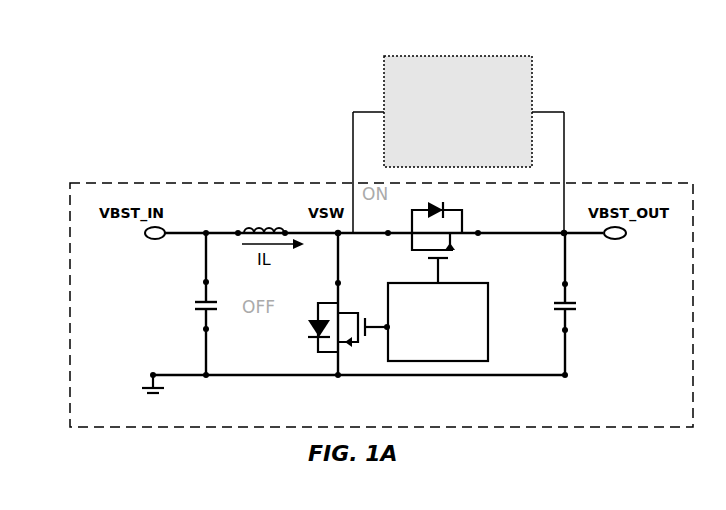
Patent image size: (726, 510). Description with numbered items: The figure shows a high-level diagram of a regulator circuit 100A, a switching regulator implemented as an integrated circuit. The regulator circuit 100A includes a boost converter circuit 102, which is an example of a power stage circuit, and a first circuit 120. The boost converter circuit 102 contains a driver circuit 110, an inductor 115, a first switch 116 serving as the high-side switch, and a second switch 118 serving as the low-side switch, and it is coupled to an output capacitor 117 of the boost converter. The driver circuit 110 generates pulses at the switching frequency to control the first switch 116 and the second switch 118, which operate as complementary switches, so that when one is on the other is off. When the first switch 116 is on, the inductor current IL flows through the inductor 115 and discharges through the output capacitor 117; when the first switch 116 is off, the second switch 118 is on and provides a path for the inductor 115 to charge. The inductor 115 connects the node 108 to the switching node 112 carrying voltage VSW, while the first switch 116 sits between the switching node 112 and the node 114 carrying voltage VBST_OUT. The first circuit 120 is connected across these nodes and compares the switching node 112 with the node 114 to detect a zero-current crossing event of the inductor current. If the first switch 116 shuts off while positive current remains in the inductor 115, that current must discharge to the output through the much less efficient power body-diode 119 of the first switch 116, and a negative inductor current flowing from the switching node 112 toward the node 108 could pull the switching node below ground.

The regulator circuit 100A is at (136, 145).
The boost converter circuit 102 is at (381, 305).
The node 108 is at (193, 304).
The driver circuit 110 is at (468, 375).
The switching node 112 is at (355, 244).
The node 114 is at (546, 243).
The inductor 115 is at (261, 219).
The first switch 116 is at (438, 256).
The output capacitor 117 is at (568, 304).
The second switch 118 is at (349, 326).
The body-diode 119 is at (437, 207).
The first circuit 120 is at (458, 144).